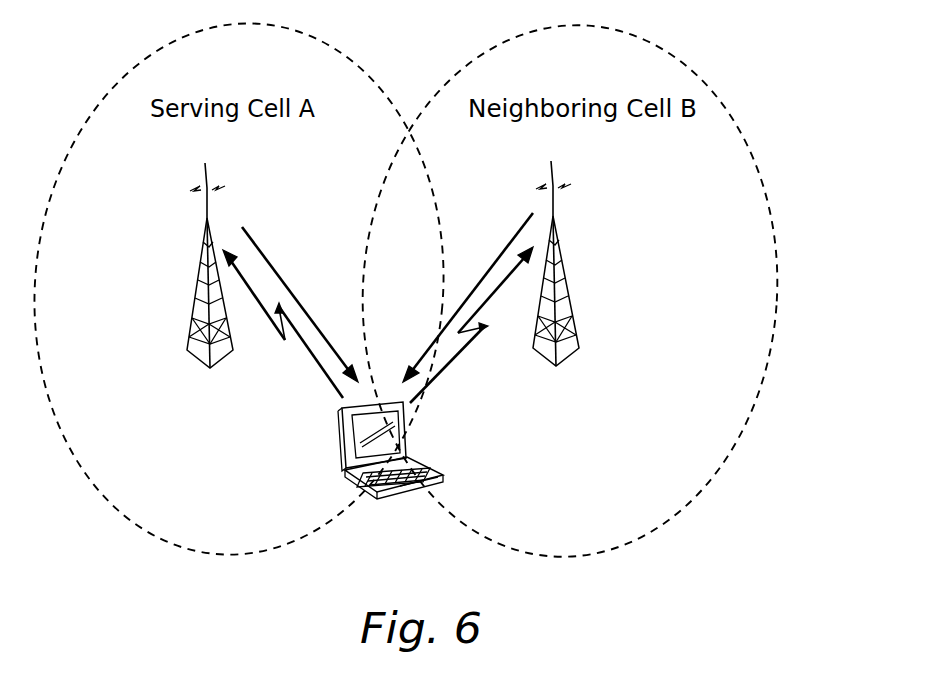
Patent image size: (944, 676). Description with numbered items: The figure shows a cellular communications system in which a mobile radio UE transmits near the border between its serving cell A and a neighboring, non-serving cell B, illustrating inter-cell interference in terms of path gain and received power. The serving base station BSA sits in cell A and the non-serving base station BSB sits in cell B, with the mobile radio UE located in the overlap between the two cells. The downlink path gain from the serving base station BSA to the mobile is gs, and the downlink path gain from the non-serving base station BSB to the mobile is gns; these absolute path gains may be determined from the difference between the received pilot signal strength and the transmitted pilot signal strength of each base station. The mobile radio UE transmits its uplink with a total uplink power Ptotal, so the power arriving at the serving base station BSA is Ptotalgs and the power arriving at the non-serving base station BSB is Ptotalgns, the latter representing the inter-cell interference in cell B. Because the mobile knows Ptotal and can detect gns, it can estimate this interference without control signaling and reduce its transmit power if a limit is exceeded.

The serving base station BSA is at (196, 293).
The non-serving base station BSB is at (572, 302).
The mobile radio UE is at (350, 455).
The downlink path gain from the serving base station gs is at (300, 294).
The downlink path gain from the non-serving base station gns is at (468, 294).
The received power at the serving base station Ptotalgs is at (254, 332).
The received power at the non-serving base station Ptotalgns is at (482, 331).
The total uplink power Ptotal is at (392, 516).